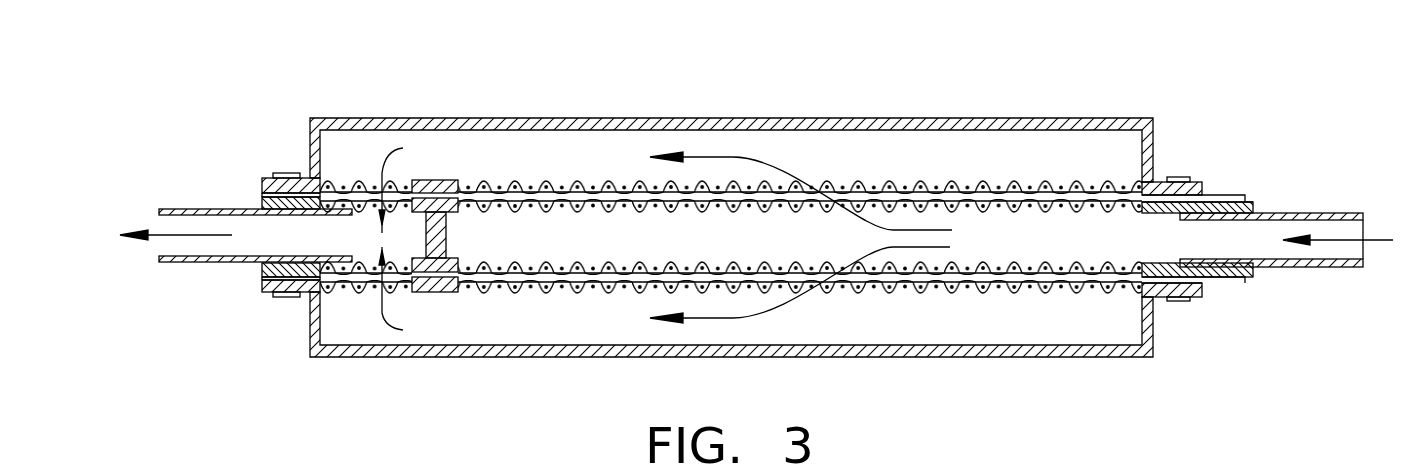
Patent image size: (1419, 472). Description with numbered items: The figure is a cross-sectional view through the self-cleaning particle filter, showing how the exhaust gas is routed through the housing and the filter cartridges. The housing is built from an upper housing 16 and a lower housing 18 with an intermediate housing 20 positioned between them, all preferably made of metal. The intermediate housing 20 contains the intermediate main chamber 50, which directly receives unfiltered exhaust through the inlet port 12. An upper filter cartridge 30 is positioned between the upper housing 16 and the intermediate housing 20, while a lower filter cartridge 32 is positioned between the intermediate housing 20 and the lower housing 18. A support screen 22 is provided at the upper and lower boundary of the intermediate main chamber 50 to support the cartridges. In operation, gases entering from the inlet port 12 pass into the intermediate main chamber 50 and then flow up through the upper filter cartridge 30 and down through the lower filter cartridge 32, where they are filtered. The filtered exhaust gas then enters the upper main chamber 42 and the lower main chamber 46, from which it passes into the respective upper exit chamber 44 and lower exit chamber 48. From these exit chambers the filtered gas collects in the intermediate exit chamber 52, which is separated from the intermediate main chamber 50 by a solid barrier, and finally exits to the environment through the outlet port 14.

The inlet port 12 is at (1295, 265).
The outlet port 14 is at (200, 208).
The upper housing 16 is at (1118, 120).
The lower housing 18 is at (1085, 358).
The intermediate housing 20 is at (1255, 207).
The support screen 22 is at (522, 183).
The upper filter cartridge 30 is at (933, 198).
The lower filter cartridge 32 is at (857, 277).
The upper main chamber 42 is at (1000, 143).
The upper exit chamber 44 is at (347, 138).
The lower main chamber 46 is at (1003, 328).
The lower exit chamber 48 is at (335, 327).
The intermediate main chamber 50 is at (552, 238).
The intermediate exit chamber 52 is at (402, 237).